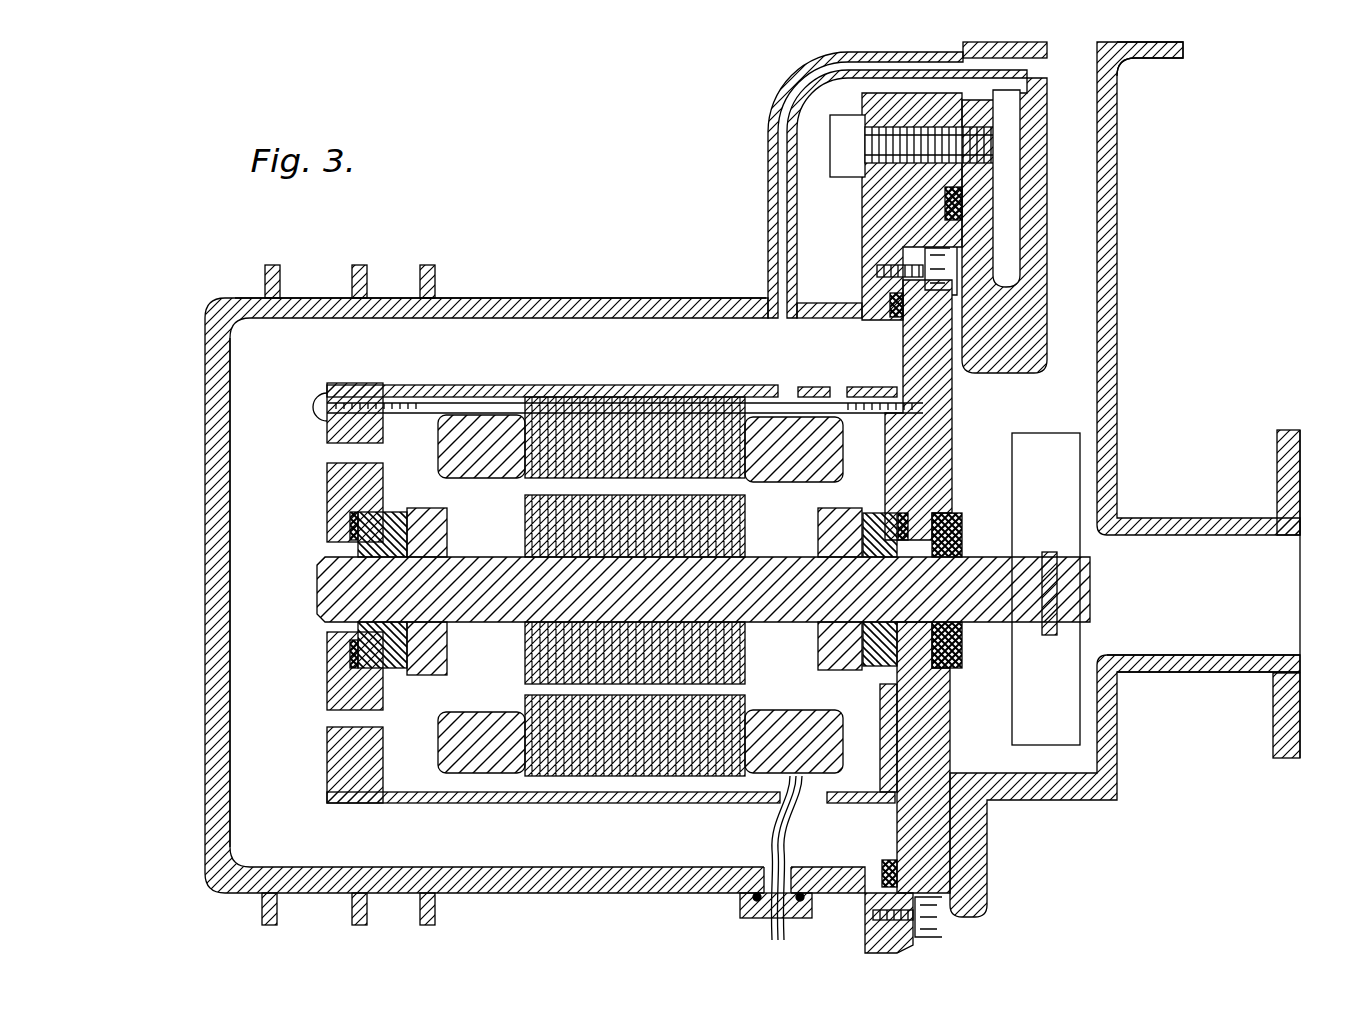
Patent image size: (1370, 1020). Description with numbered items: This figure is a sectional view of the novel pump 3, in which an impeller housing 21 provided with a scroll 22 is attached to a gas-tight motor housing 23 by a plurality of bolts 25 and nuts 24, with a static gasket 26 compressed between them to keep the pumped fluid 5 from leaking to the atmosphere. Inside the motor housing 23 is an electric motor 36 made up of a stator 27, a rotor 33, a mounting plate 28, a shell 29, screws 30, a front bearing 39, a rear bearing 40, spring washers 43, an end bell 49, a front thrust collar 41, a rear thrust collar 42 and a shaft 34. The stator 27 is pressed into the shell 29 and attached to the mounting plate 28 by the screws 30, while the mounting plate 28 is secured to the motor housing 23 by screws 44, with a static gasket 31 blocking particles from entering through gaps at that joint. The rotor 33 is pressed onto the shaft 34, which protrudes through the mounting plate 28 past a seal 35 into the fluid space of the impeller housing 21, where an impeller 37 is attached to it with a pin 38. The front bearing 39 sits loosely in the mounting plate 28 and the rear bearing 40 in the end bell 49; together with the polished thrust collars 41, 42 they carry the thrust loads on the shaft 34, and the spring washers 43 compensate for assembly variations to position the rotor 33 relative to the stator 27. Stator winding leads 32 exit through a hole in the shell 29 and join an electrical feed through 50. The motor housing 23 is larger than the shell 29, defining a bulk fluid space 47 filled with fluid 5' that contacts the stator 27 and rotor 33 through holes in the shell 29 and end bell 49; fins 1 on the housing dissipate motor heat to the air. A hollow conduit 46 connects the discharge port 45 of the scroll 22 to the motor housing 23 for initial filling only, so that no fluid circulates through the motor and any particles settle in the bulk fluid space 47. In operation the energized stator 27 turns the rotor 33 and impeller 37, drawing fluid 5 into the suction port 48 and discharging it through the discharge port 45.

The fins 1 is at (265, 280).
The pump 3 is at (475, 274).
The pumped fluid 5 is at (1125, 601).
The fluid 5' is at (255, 592).
The impeller housing 21 is at (1215, 672).
The scroll 22 is at (1102, 400).
The motor housing 23 is at (628, 296).
The nuts 24 is at (850, 182).
The bolts 25 is at (1035, 197).
The static gasket 26 is at (962, 210).
The stator 27 is at (690, 415).
The mounting plate 28 is at (903, 350).
The shell 29 is at (440, 385).
The screws 30 is at (790, 385).
The static gasket 31 is at (895, 305).
The stator winding leads 32 is at (775, 840).
The rotor 33 is at (530, 660).
The shaft 34 is at (465, 565).
The seal 35 is at (962, 540).
The electric motor 36 is at (566, 364).
The impeller 37 is at (1045, 433).
The pin 38 is at (1050, 552).
The front bearing 39 is at (880, 686).
The rear bearing 40 is at (385, 510).
The front thrust collar 41 is at (820, 660).
The rear thrust collar 42 is at (428, 675).
The spring washers 43 is at (905, 512).
The screws 44 is at (930, 280).
The discharge port 45 is at (1085, 78).
The hollow conduit 46 is at (768, 195).
The bulk fluid space 47 is at (255, 388).
The suction port 48 is at (1300, 710).
The end bell 49 is at (327, 768).
The electrical feed through 50 is at (745, 915).